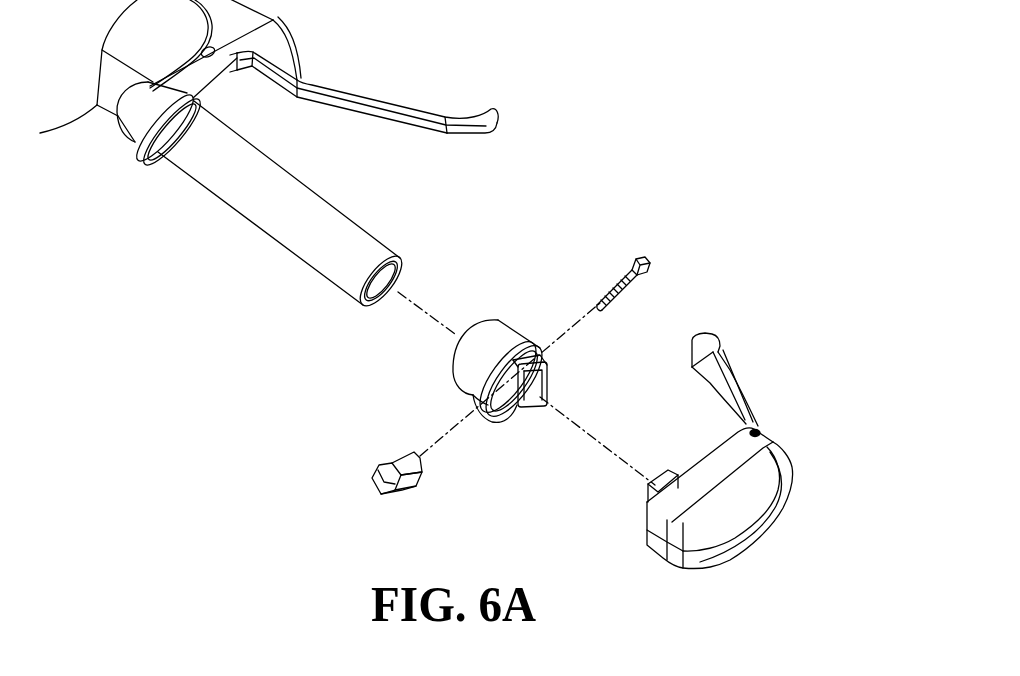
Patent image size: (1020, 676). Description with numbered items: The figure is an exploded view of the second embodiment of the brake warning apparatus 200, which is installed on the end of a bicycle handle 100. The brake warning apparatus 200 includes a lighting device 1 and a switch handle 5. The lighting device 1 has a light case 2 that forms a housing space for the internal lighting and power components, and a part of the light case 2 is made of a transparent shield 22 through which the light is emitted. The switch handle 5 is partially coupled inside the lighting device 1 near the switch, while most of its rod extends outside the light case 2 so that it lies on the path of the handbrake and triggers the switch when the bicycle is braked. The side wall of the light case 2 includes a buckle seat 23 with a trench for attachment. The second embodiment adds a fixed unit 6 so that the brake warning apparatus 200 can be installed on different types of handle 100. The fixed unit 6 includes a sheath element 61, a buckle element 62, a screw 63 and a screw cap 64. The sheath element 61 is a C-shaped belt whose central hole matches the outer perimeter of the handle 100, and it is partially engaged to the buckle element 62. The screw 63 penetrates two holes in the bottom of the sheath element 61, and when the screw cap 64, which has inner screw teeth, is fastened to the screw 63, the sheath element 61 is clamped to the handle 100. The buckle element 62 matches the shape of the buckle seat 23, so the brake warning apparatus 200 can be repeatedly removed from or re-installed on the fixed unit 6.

The handle 100 is at (213, 175).
The fixed unit 6 is at (705, 157).
The sheath element 61 is at (493, 343).
The buckle element 62 is at (540, 366).
The screw 63 is at (647, 262).
The screw cap 64 is at (392, 463).
The light case 2 is at (658, 530).
The transparent shield 22 is at (750, 515).
The buckle seat 23 is at (680, 478).
The switch handle 5 is at (740, 393).
The lighting device 1 is at (797, 463).
The brake warning apparatus 200 is at (897, 380).